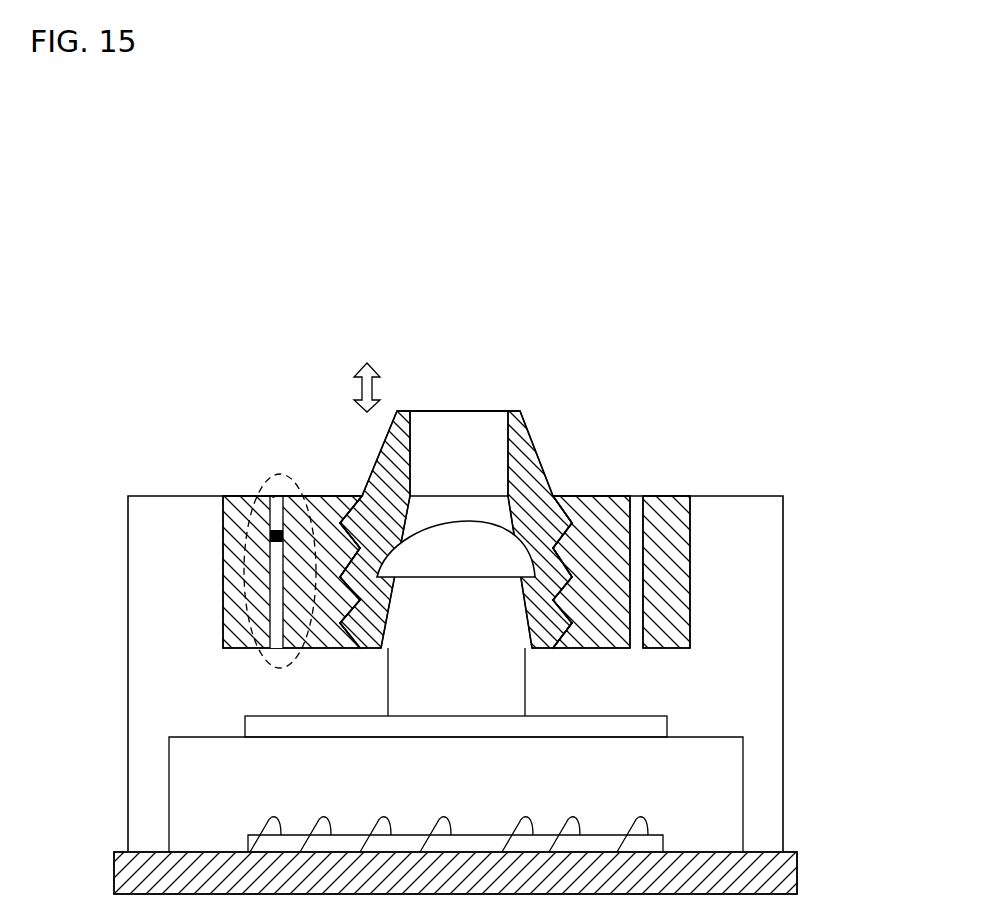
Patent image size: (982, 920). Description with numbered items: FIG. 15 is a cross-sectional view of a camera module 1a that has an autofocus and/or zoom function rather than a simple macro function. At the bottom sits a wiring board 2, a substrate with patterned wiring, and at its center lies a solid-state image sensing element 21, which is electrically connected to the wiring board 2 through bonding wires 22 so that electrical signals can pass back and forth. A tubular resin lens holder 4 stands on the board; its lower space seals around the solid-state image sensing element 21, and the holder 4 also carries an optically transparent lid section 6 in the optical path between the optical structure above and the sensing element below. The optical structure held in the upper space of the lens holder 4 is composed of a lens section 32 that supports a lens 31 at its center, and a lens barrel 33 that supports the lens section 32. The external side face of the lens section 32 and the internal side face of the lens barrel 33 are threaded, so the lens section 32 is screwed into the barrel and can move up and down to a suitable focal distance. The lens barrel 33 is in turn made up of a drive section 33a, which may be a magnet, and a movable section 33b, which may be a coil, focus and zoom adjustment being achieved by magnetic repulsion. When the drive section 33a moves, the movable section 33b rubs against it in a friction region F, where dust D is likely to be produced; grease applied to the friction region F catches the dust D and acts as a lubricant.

The camera module 1a is at (748, 402).
The wiring board 2 is at (787, 878).
The lens holder 4 is at (770, 623).
The lid section 6 is at (434, 732).
The solid-state image sensing element 21 is at (603, 840).
The bonding wires 22 is at (525, 815).
The lens 31 is at (459, 538).
The lens section 32 is at (527, 452).
The lens barrel 33 is at (460, 523).
The drive section 33a is at (669, 545).
The movable section 33b is at (617, 503).
The dust D is at (278, 530).
The friction region F is at (262, 488).